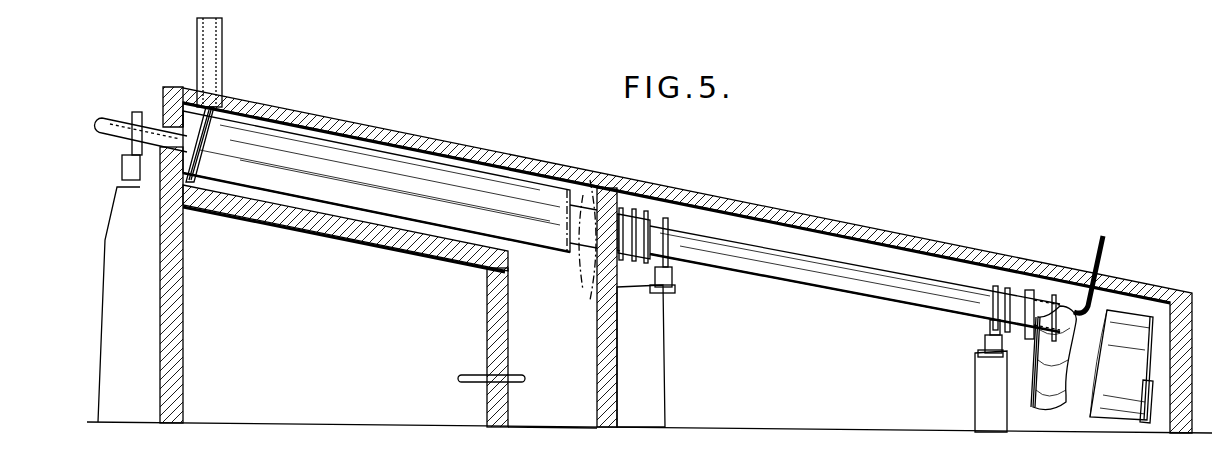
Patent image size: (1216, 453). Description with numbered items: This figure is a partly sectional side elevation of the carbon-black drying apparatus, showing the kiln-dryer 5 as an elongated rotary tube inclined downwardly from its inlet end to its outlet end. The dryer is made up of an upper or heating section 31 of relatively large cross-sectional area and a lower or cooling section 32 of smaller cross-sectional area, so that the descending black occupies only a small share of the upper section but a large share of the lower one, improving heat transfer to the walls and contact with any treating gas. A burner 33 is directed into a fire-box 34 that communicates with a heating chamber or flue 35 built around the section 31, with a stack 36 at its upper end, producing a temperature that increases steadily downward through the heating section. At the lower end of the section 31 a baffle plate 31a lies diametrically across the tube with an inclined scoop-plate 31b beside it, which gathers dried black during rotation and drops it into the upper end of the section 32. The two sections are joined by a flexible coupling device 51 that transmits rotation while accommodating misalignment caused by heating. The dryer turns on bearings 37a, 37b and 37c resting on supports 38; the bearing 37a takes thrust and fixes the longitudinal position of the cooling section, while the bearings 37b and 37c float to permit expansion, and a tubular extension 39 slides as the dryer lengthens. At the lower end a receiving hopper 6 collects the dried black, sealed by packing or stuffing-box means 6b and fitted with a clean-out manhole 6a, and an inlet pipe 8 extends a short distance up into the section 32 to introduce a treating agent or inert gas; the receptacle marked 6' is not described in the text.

The kiln-dryer 5 is at (390, 131).
The heating chamber or flue 35 is at (465, 168).
The stack 36 is at (223, 64).
The tubular extension 39 is at (123, 123).
The bearing 37c is at (124, 163).
The supports 38 is at (113, 208).
The upper or heating section 31 is at (393, 213).
The baffle plate 31a is at (593, 253).
The scoop-plate 31b is at (593, 290).
The receiving hopper 6 is at (570, 221).
The flexible coupling device 51 is at (630, 218).
The bearing 37b is at (664, 289).
The lower or cooling section 32 is at (800, 279).
The bearing 37a is at (983, 343).
The packing or stuffing-box means 6b is at (1033, 287).
The inlet pipe 8 is at (1105, 252).
The receptacle 6' is at (1121, 365).
The clean-out manhole 6a is at (1153, 407).
The burner 33 is at (521, 375).
The fire-box 34 is at (552, 409).